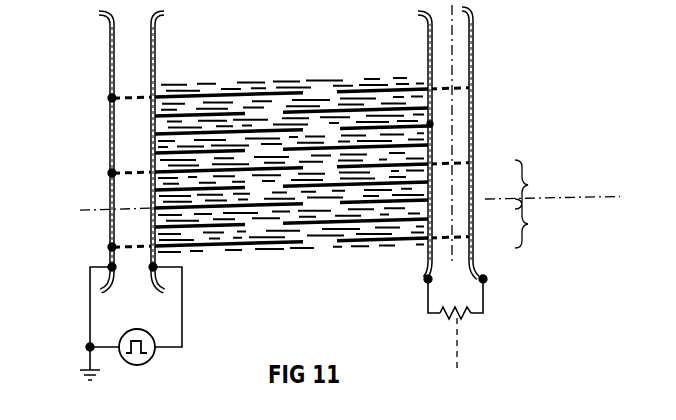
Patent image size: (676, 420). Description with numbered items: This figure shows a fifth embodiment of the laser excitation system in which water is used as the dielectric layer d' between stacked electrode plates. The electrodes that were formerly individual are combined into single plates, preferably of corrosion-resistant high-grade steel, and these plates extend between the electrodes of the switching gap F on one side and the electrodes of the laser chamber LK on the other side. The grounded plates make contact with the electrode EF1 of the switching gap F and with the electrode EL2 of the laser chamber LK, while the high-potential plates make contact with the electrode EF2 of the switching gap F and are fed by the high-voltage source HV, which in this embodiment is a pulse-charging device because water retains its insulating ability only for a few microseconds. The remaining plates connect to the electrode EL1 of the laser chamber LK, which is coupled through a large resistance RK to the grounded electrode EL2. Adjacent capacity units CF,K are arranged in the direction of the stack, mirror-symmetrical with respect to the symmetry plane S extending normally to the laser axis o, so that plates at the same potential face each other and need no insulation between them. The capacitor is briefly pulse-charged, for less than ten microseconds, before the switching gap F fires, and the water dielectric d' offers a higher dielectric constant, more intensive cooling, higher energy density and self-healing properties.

The electrode of the switching gap EF1 is at (106, 31).
The electrode of the switching gap EF2 is at (159, 33).
The electrode of the laser chamber EL1 is at (425, 26).
The electrode of the laser chamber EL2 is at (476, 22).
The dielectric layer d' is at (470, 127).
The symmetry plate S is at (610, 209).
The capacity unit CF,K is at (544, 204).
The switching gap F is at (131, 321).
The high-voltage source HV is at (151, 358).
The laser chamber LK is at (455, 294).
The large resistance RK is at (448, 320).
The laser axis o is at (457, 360).